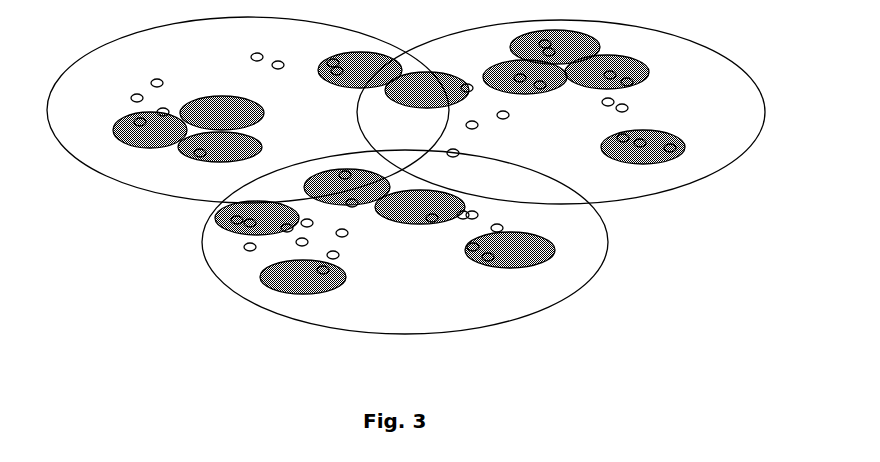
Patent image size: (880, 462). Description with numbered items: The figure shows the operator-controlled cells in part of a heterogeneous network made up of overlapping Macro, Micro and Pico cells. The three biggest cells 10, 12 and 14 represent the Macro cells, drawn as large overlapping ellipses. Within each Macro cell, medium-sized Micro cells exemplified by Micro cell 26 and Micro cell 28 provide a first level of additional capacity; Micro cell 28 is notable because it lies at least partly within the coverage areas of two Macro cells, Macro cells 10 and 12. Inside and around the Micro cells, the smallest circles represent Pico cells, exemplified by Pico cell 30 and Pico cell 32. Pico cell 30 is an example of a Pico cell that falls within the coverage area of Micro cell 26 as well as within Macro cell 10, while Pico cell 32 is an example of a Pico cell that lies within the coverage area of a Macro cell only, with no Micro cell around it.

The Macro cell 10 is at (561, 112).
The Macro cell 12 is at (248, 110).
The Macro cell 14 is at (405, 251).
The Micro cell 26 is at (555, 47).
The Micro cell 28 is at (427, 90).
The Pico cell 30 is at (659, 76).
The Pico cell 32 is at (644, 111).